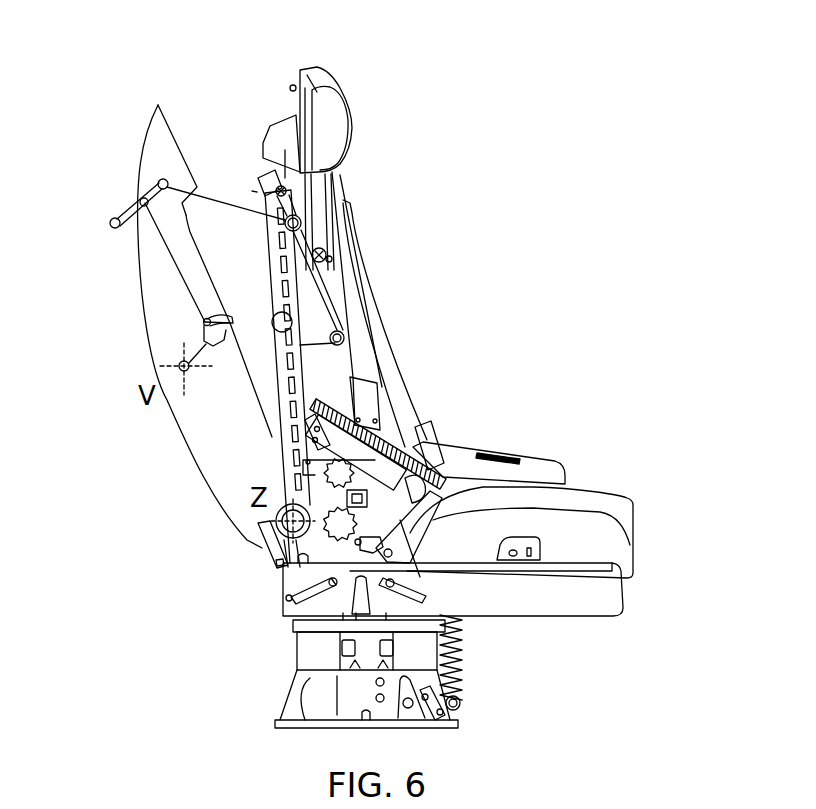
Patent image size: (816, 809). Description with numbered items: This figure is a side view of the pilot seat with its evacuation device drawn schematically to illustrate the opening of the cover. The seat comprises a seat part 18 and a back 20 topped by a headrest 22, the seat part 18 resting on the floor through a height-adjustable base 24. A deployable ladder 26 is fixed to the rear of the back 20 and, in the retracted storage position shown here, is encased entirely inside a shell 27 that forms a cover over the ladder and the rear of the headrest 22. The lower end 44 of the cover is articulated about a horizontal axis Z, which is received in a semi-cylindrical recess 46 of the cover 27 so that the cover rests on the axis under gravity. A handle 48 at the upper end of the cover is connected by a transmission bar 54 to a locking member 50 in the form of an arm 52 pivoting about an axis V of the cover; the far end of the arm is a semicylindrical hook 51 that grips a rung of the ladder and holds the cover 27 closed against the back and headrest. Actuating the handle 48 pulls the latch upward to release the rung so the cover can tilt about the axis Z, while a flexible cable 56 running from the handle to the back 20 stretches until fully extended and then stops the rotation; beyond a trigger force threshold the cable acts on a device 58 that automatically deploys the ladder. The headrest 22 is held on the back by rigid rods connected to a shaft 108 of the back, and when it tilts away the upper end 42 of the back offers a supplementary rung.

The seat part 18 is at (595, 545).
The back 20 is at (378, 387).
The headrest 22 is at (334, 122).
The height-adjustable base 24 is at (308, 681).
The deployable ladder 26 is at (266, 178).
The shell (cover) 27 is at (192, 420).
The upper end of the back 42 is at (296, 118).
The lower end of the cover 44 is at (265, 548).
The semi-cylindrical recess 46 is at (257, 536).
The handle 48 is at (135, 205).
The locking member (latch) 50 is at (176, 324).
The semicylindrical hook 51 is at (203, 324).
The arm 52 is at (195, 349).
The transmission bar 54 is at (167, 248).
The flexible cable 56 is at (213, 195).
The device for controlling deployment of the ladder 58 is at (347, 222).
The shaft of the back 108 is at (329, 261).